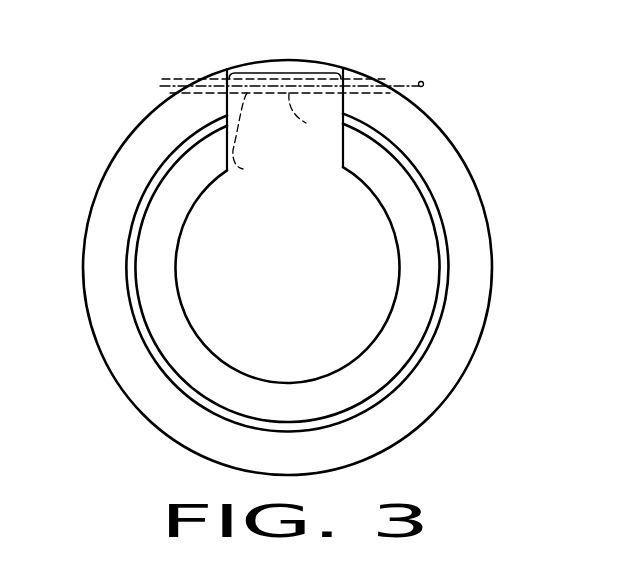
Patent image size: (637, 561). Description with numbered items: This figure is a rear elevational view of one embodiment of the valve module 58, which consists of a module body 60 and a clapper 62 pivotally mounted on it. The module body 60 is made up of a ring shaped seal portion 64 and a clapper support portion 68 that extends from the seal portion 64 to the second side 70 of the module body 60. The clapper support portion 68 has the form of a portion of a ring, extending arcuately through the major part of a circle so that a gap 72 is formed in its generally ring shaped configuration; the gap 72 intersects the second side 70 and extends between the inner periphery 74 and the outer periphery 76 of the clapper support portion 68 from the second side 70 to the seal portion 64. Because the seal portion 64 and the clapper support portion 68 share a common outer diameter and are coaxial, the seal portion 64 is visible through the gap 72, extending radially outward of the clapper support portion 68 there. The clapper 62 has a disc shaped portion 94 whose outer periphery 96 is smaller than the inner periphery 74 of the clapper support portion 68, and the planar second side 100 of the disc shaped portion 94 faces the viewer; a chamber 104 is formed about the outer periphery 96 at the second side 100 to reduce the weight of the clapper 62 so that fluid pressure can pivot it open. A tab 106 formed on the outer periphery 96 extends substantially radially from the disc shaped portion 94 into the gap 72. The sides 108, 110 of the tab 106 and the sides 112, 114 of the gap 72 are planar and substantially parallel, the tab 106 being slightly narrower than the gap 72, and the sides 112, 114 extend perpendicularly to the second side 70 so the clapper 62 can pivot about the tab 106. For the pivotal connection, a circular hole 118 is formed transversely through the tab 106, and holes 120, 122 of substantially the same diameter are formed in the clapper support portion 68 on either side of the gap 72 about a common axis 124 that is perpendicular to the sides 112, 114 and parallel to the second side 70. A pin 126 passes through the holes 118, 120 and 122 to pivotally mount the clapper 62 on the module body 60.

The valve module 58 is at (466, 126).
The module body 60 is at (478, 320).
The clapper 62 is at (430, 262).
The seal portion 64 is at (268, 64).
The clapper support portion 68 is at (480, 282).
The second side 70 is at (478, 230).
The gap 72 is at (232, 58).
The inner periphery 74 is at (230, 427).
The outer periphery 76 is at (388, 448).
The disc shaped portion 94 is at (185, 275).
The outer periphery 96 is at (165, 365).
The second side 100 is at (300, 276).
The chamber 104 is at (378, 383).
The tab 106 is at (307, 158).
The side 108 is at (225, 108).
The side 110 is at (345, 103).
The side 112 is at (236, 86).
The side 114 is at (336, 66).
The circular hole 118 is at (244, 172).
The hole 120 is at (178, 83).
The hole 122 is at (383, 81).
The common axis 124 is at (422, 87).
The pin 126 is at (306, 124).